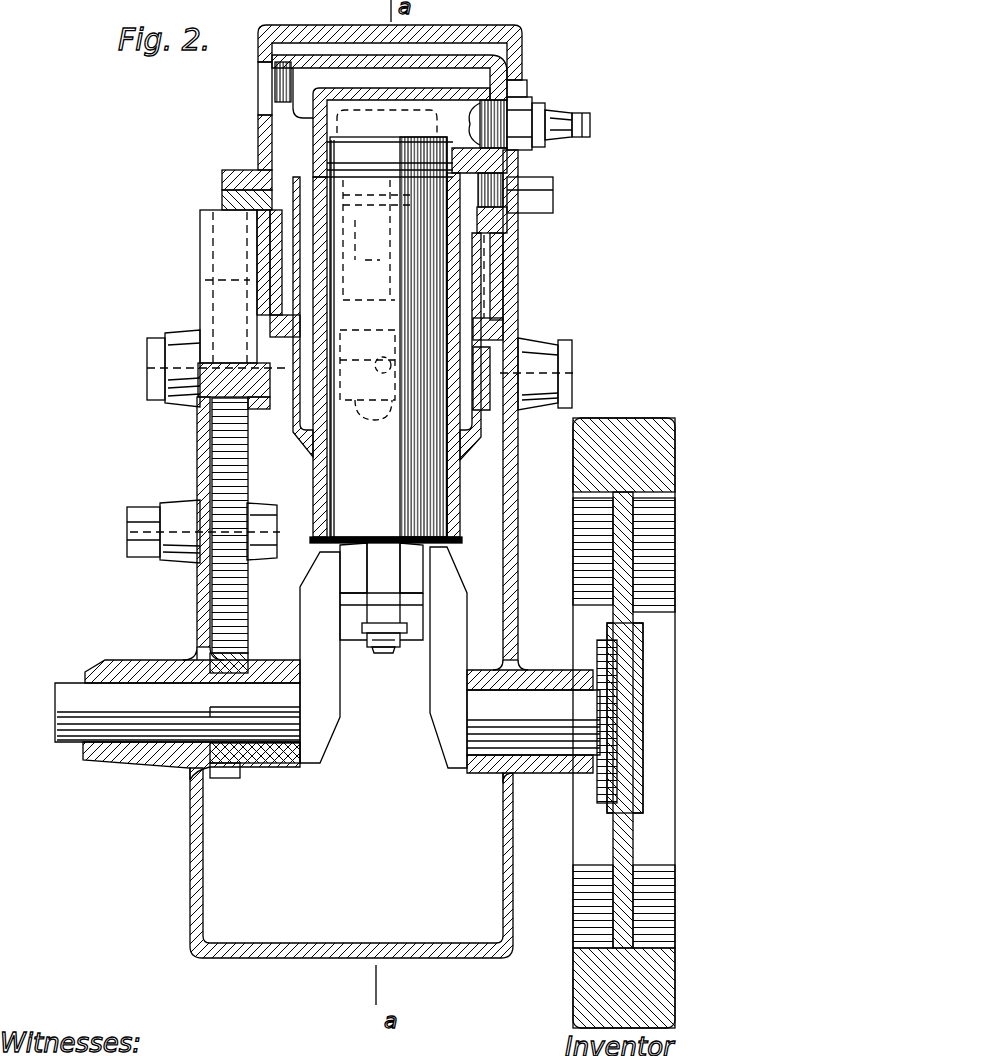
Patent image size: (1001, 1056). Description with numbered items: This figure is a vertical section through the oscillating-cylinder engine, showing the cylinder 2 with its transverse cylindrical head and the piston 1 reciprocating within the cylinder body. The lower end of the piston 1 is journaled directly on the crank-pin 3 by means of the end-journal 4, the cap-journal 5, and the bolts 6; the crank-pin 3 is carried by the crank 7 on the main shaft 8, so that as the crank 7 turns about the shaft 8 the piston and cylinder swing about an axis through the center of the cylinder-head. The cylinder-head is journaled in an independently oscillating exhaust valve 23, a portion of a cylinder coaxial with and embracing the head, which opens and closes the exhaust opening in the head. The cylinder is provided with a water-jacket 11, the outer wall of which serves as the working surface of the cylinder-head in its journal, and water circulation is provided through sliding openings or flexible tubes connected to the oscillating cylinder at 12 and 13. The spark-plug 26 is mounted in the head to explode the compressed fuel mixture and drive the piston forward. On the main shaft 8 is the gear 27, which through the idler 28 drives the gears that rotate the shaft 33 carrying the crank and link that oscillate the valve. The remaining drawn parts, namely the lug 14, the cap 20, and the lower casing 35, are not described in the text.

The piston 1 is at (390, 323).
The cylinder 2 is at (455, 497).
The crank-pin 3 is at (427, 580).
The end-journal 4 is at (417, 567).
The cap-journal 5 is at (413, 607).
The bolts 6 is at (395, 645).
The crank 7 is at (383, 657).
The main shaft 8 is at (327, 719).
The water-jacket 11 is at (389, 116).
The water circulation connection 12 is at (290, 100).
The water circulation connection 13 is at (503, 200).
The lug 14 is at (263, 98).
The cap 20 is at (520, 60).
The exhaust valve 23 is at (267, 333).
The spark-plug 26 is at (525, 107).
The gear 27 is at (243, 665).
The idler 28 is at (245, 623).
The shaft 33 is at (147, 366).
The casing 35 is at (190, 878).